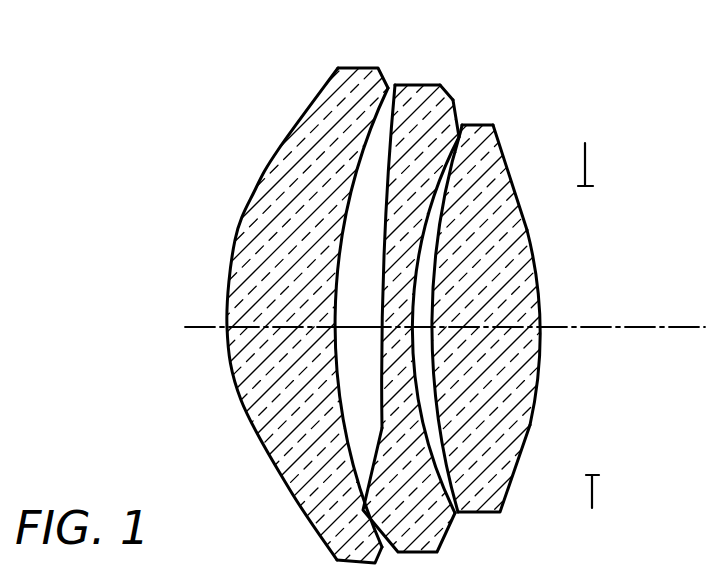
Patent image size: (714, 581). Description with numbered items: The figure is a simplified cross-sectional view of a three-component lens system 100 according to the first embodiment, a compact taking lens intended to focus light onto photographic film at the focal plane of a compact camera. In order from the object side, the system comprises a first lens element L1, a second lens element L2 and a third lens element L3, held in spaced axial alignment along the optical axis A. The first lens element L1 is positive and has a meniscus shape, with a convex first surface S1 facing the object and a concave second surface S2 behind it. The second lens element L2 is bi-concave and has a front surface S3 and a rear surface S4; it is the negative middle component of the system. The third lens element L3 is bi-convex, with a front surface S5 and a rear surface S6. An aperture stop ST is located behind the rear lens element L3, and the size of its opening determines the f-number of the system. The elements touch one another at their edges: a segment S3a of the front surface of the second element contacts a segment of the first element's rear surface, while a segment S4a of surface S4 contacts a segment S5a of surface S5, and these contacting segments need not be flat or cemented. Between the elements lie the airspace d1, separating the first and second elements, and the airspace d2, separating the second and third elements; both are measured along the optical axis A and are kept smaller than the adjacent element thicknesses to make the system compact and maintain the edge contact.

The three-component lens system 100 is at (218, 180).
The first lens element L1 is at (357, 323).
The second lens element L2 is at (357, 294).
The third lens element L3 is at (357, 317).
The first surface S1 is at (231, 268).
The second surface S2 is at (350, 181).
The front surface S3 is at (378, 165).
The contacting surface segment S3a is at (374, 126).
The rear surface S4 is at (420, 403).
The contacting surface segment S4a is at (460, 135).
The front surface S5 is at (449, 185).
The contacting surface segment S5a is at (470, 124).
The rear surface S6 is at (535, 250).
The airspace d1 is at (360, 311).
The airspace d2 is at (420, 318).
The optical axis A is at (595, 326).
The aperture stop ST is at (597, 490).